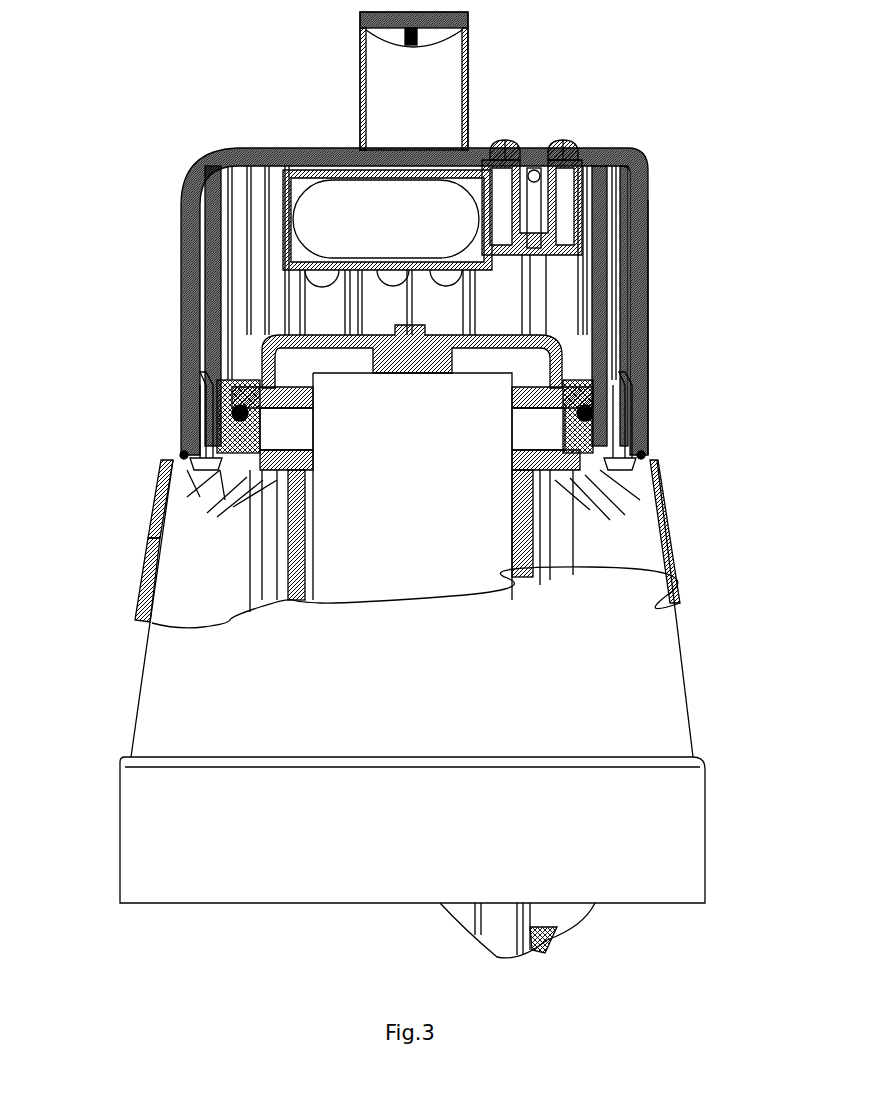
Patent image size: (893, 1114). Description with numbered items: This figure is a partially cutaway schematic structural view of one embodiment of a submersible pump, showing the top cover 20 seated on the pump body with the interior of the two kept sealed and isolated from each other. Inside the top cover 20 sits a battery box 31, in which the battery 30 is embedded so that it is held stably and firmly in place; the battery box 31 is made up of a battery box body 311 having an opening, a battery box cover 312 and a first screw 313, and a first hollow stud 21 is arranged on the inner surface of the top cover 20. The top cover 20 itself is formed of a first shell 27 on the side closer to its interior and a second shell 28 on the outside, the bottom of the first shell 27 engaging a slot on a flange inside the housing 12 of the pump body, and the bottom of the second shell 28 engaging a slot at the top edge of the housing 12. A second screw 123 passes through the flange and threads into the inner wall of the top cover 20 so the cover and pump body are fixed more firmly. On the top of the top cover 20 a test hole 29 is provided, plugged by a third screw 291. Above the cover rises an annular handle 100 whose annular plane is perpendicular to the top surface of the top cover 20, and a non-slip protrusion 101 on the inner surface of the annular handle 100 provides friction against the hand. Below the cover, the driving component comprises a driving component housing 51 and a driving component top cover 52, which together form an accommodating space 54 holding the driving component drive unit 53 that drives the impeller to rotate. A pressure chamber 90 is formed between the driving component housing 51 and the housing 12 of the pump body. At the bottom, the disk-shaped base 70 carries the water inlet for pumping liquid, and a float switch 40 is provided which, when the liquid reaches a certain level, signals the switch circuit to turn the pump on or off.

The housing 12 is at (665, 488).
The top cover 20 is at (600, 712).
The first hollow stud 21 is at (357, 150).
The first shell 27 is at (245, 165).
The second shell 28 is at (181, 386).
The test hole 29 is at (645, 190).
The battery 30 is at (470, 228).
The battery box 31 is at (293, 222).
The float switch 40 is at (537, 953).
The driving component housing 51 is at (672, 555).
The driving component top cover 52 is at (455, 332).
The driving component drive unit 53 is at (390, 527).
The accommodating space 54 is at (603, 440).
The base 70 is at (200, 836).
The pressure chamber 90 is at (240, 583).
The annular handle 100 is at (440, 78).
The non-slip protrusion 101 is at (448, 34).
The second screw 123 is at (177, 420).
The third screw 291 is at (560, 165).
The battery box body 311 is at (545, 142).
The battery box cover 312 is at (650, 375).
The first screw 313 is at (337, 280).